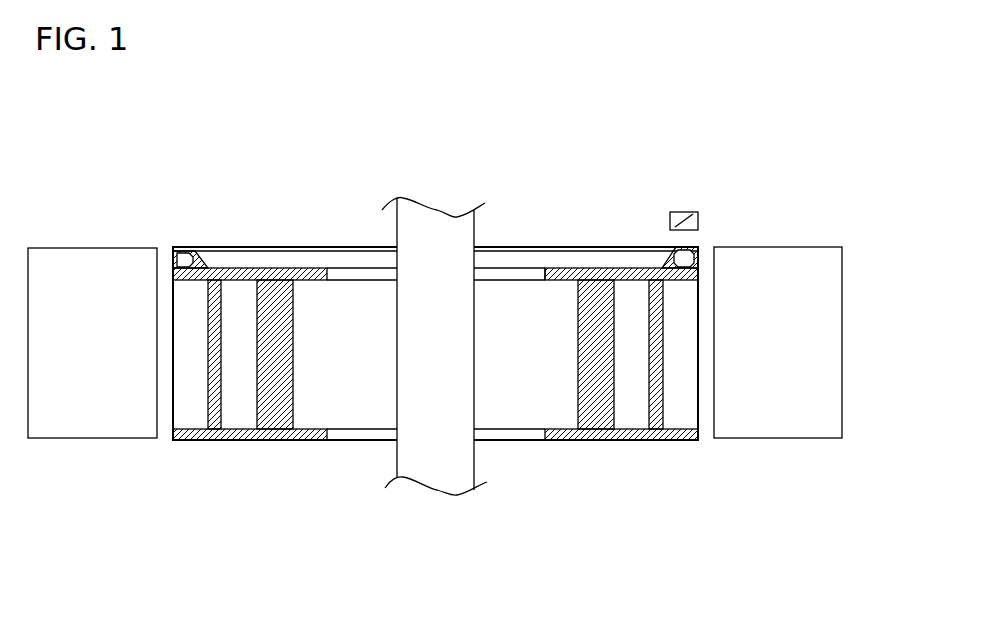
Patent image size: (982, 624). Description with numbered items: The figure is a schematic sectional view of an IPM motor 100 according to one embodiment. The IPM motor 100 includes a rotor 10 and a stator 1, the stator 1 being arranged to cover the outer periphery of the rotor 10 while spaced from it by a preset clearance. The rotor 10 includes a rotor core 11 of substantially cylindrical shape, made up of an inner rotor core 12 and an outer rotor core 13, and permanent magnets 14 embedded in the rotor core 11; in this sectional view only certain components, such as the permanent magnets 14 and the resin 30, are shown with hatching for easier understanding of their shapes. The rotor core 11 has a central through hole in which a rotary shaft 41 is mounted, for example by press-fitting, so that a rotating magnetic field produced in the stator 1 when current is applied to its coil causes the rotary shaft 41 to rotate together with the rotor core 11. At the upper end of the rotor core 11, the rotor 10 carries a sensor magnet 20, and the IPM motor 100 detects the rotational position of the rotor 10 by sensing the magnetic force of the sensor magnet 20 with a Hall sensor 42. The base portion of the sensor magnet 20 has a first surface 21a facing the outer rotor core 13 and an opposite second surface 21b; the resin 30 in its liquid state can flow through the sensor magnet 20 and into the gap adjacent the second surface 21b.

The stator 1 is at (782, 410).
The rotor 10 is at (683, 445).
The IPM motor 100 is at (795, 534).
The rotor core 11 is at (548, 539).
The inner rotor core 12 is at (523, 415).
The outer rotor core 13 is at (635, 415).
The permanent magnets 14 is at (650, 300).
The sensor magnet 20 is at (698, 246).
The first surface 21a is at (683, 281).
The second surface 21b is at (682, 248).
The resin 30 is at (597, 280).
The rotary shaft 41 is at (407, 337).
The Hall sensor 42 is at (693, 212).